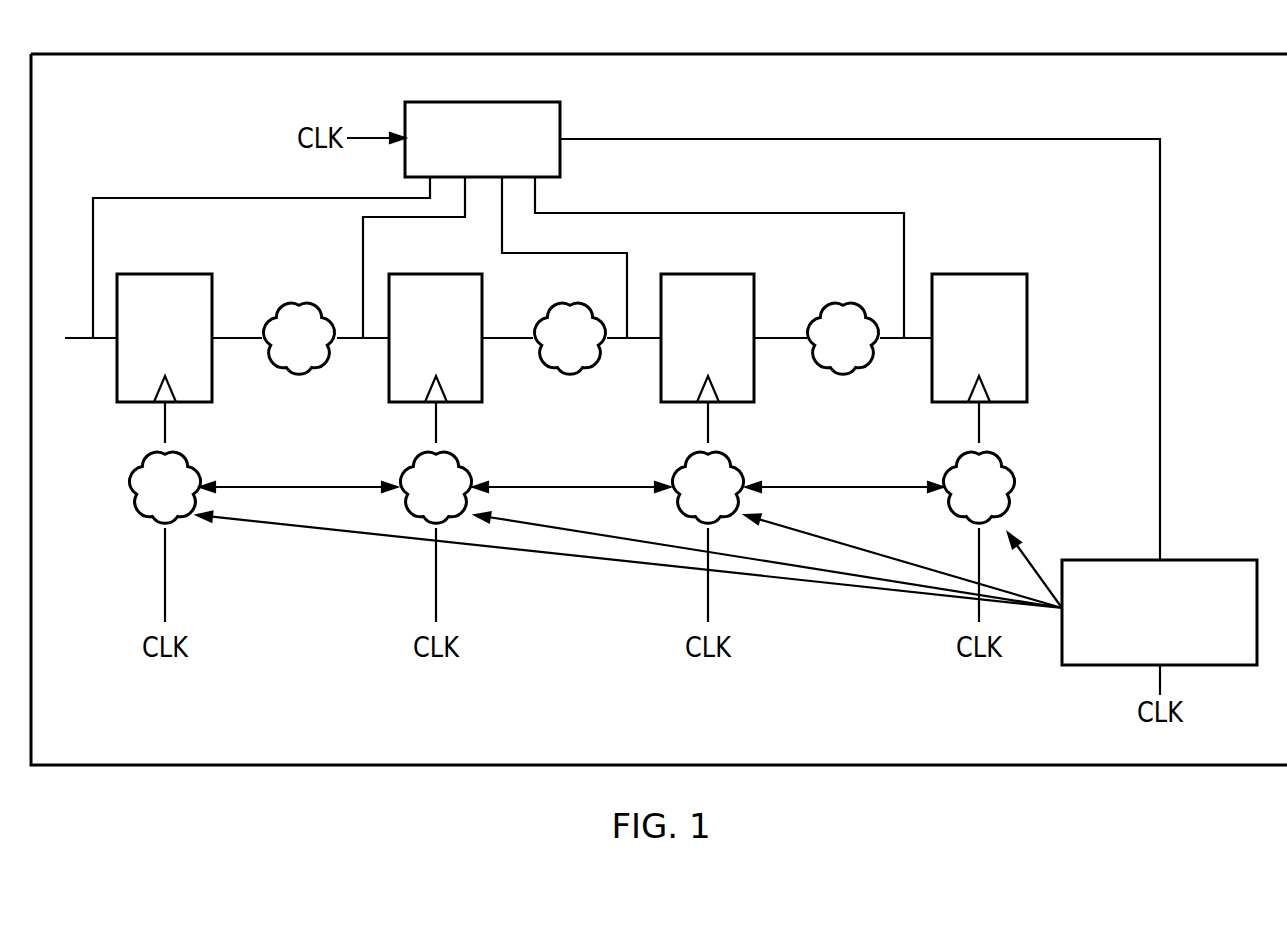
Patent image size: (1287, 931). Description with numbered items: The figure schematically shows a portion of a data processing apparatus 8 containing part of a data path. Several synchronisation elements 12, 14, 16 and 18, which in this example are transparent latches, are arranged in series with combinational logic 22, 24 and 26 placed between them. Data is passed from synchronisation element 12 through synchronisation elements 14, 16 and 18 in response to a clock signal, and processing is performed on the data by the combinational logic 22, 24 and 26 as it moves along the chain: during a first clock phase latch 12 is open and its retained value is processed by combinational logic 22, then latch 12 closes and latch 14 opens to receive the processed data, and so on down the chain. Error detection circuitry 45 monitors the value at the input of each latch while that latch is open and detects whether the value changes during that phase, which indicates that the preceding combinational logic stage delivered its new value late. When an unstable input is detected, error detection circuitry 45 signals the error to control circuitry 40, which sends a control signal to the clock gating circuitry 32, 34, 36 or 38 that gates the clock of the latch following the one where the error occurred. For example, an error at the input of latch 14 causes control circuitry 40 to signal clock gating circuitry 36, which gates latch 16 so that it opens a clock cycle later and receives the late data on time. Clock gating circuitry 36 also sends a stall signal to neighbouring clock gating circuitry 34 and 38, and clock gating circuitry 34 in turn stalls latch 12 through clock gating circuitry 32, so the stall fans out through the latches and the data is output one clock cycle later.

The data processing apparatus 8 is at (1238, 54).
The error detection circuitry 45 is at (562, 112).
The synchronisation element 12 is at (162, 273).
The synchronisation element 14 is at (436, 273).
The synchronisation element 16 is at (708, 273).
The synchronisation element 18 is at (979, 273).
The combinational logic 22 is at (312, 378).
The combinational logic 24 is at (585, 378).
The combinational logic 26 is at (855, 378).
The clock gating circuitry 32 is at (200, 462).
The clock gating circuitry 34 is at (471, 462).
The clock gating circuitry 36 is at (743, 462).
The clock gating circuitry 38 is at (1014, 462).
The control circuitry 40 is at (1200, 560).